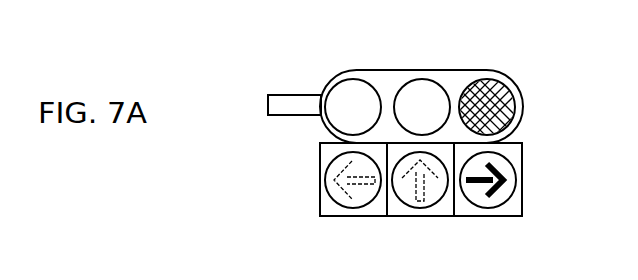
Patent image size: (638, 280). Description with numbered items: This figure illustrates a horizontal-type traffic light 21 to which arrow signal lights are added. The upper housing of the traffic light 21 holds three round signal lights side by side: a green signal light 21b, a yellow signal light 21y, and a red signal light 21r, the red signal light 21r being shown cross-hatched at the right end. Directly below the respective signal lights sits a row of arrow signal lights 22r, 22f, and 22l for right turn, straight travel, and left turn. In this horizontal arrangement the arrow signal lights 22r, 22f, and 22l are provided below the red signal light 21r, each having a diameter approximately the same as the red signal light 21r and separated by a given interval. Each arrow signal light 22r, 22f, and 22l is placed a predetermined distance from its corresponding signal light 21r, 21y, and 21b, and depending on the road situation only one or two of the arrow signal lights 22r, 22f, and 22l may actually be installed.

The traffic light 21 is at (478, 67).
The green signal light 21b is at (354, 78).
The yellow signal light 21y is at (421, 78).
The red signal light 21r is at (516, 100).
The arrow signal light for left turn 22l is at (357, 208).
The arrow signal light for straight 22f is at (421, 208).
The arrow signal light for right turn 22r is at (516, 180).